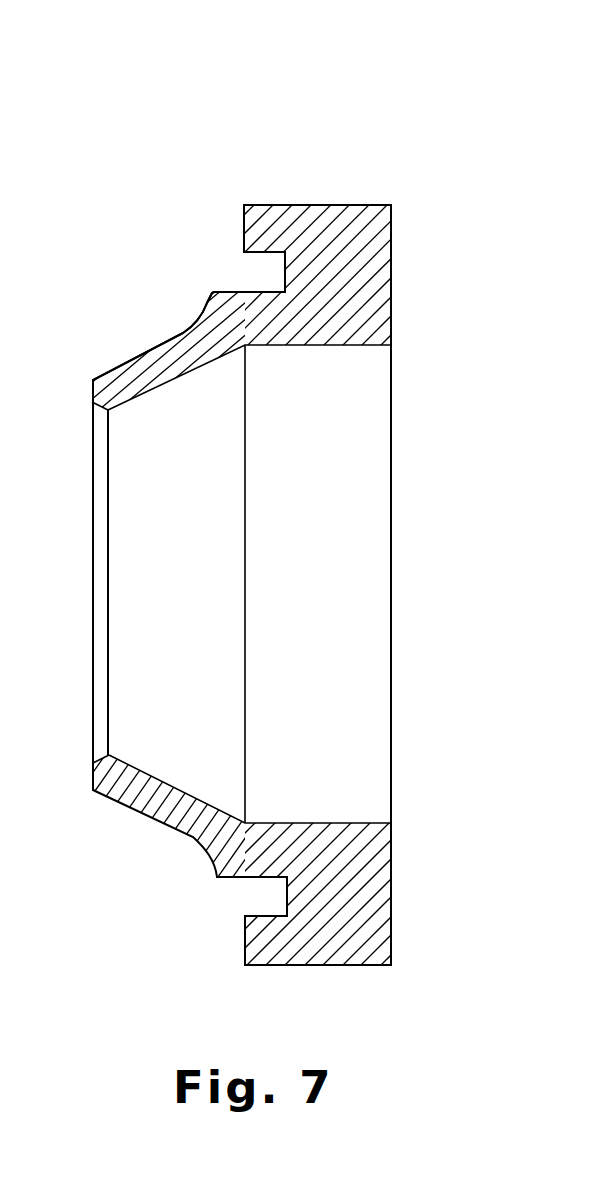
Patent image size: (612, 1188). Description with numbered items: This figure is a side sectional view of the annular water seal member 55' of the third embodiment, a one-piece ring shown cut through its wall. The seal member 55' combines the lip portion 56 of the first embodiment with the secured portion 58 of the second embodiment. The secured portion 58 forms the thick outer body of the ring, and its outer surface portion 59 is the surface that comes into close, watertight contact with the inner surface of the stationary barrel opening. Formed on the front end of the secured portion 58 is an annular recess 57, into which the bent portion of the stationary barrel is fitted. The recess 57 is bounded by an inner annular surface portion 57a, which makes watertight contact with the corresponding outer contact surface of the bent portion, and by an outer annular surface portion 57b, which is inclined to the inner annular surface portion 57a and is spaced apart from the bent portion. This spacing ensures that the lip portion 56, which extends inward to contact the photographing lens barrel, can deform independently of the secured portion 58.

The annular water seal member 55' is at (248, 551).
The lip portion 56 is at (122, 367).
The annular recess 57 is at (270, 277).
The inner annular surface portion 57a is at (251, 262).
The outer annular surface portion 57b is at (228, 291).
The secured portion 58 is at (372, 252).
The outer surface portion 59 is at (305, 205).